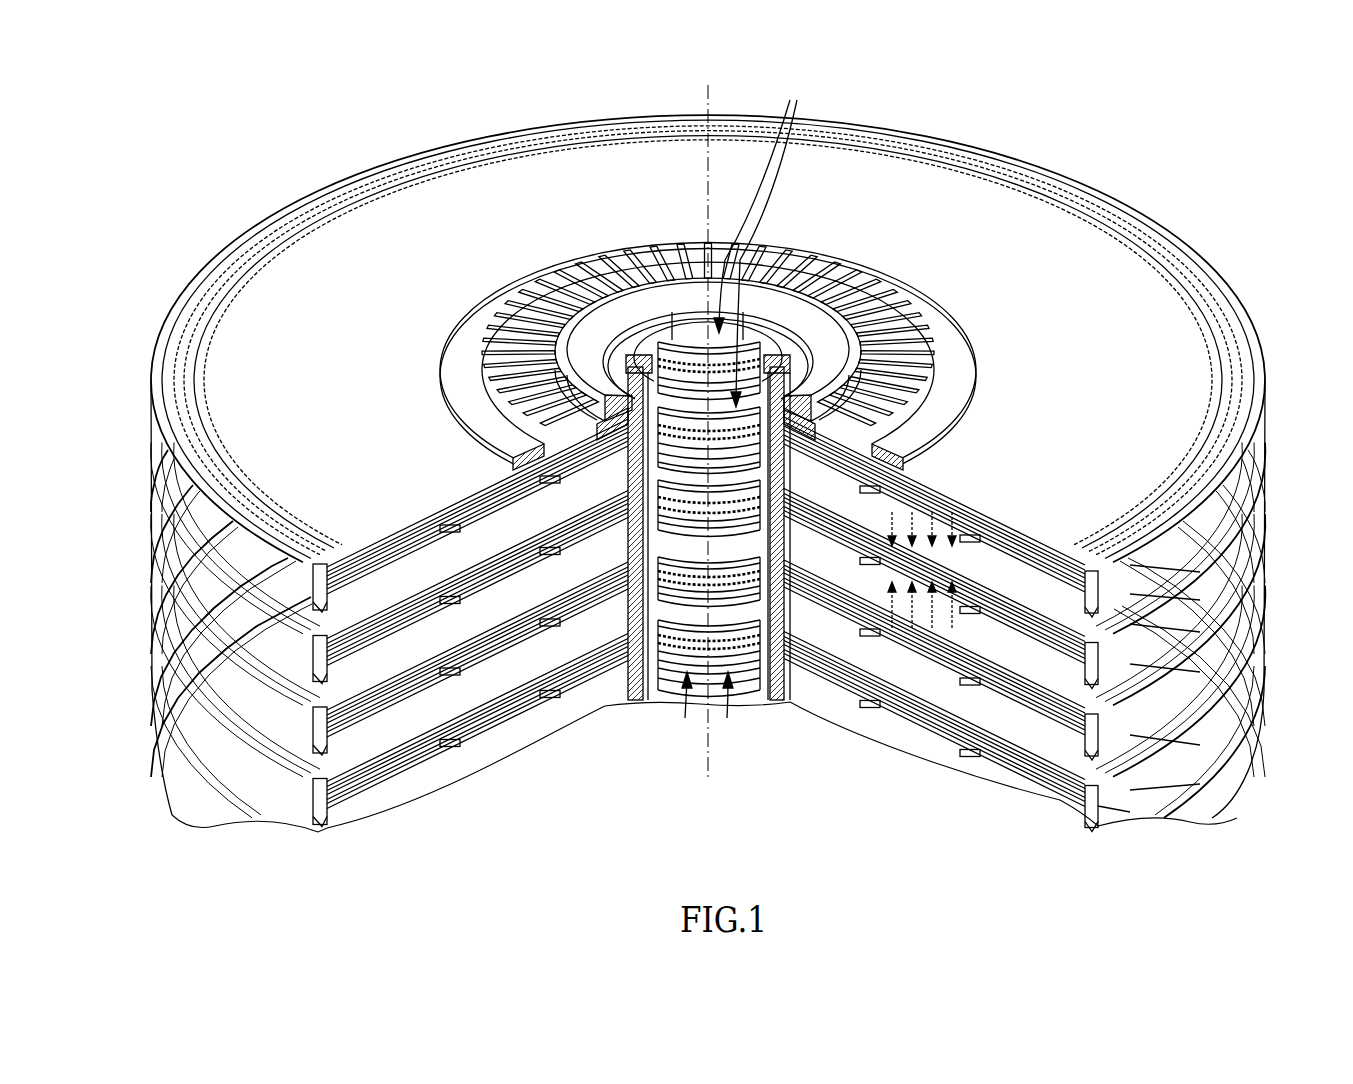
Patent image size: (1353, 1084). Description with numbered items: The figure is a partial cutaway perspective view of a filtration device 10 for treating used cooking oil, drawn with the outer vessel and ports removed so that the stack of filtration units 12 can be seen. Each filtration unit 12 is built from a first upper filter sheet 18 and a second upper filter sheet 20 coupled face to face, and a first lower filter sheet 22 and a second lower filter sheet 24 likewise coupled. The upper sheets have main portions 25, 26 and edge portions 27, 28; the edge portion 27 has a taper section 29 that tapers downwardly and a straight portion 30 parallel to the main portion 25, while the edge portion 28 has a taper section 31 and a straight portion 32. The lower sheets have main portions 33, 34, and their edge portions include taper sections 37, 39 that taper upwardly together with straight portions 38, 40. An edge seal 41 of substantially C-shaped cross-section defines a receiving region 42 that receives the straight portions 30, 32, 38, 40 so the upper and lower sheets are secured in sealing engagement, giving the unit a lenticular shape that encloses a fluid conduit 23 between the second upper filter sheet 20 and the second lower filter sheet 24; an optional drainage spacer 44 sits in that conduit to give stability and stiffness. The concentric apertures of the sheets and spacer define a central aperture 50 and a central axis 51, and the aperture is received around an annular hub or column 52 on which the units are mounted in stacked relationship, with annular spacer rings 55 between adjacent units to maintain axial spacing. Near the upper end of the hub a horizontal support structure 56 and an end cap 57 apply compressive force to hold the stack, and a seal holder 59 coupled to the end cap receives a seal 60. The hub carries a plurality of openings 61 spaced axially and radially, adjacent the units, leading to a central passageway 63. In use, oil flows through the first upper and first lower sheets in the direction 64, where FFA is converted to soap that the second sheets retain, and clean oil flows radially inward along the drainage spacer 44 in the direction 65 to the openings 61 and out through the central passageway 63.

The filtration device 10 is at (1152, 158).
The filtration unit 12 is at (130, 362).
The first upper filter sheet 18 is at (380, 542).
The second upper filter sheet 20 is at (415, 525).
The first lower filter sheet 22 is at (425, 622).
The fluid conduit 23 is at (582, 698).
The second lower filter sheet 24 is at (498, 575).
The main portion 25 is at (950, 508).
The main portion 26 is at (1002, 530).
The edge portion 27 is at (1192, 450).
The edge portion 28 is at (1090, 562).
The taper section 29 is at (1110, 560).
The straight portion 30 is at (1100, 586).
The taper section 31 is at (1100, 652).
The straight portion 32 is at (1100, 612).
The main portion 33 is at (1000, 760).
The main portion 34 is at (1020, 765).
The taper section 37 is at (1052, 750).
The straight portion 38 is at (1090, 760).
The taper section 39 is at (1200, 784).
The straight portion 40 is at (1130, 812).
The edge seal 41 is at (262, 236).
The receiving region 42 is at (322, 566).
The drainage spacer 44 is at (612, 488).
The central aperture 50 is at (640, 300).
The central axis 51 is at (705, 98).
The annular hub or column 52 is at (666, 695).
The annular spacer rings 55 is at (838, 605).
The horizontal support structure 56 is at (965, 354).
The end cap 57 is at (577, 313).
The seal holder 59 is at (682, 312).
The seal 60 is at (790, 345).
The openings 61 is at (740, 738).
The central passageway 63 is at (692, 706).
The flow direction through filter sheets 64 is at (1105, 692).
The radially inward flow direction 65 is at (878, 560).